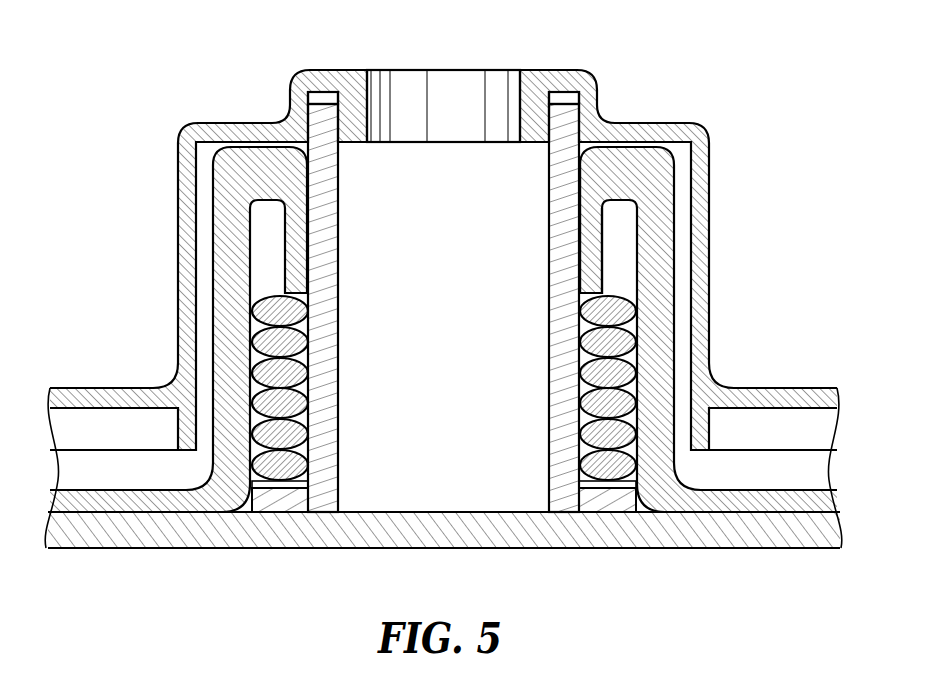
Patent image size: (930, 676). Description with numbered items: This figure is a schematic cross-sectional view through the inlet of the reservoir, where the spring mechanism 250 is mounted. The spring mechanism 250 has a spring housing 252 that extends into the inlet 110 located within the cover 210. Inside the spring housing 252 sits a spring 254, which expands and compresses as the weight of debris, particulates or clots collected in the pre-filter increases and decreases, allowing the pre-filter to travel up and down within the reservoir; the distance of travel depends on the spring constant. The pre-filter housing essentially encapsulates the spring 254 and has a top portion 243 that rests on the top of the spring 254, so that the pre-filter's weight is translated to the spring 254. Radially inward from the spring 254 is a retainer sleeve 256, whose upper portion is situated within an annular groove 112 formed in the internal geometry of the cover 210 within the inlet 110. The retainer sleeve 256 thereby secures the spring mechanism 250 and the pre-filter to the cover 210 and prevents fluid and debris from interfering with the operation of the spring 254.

The inlet 110 is at (453, 107).
The annular groove 112 is at (323, 98).
The cover 210 is at (98, 398).
The top portion 243 is at (587, 217).
The spring mechanism 250 is at (230, 217).
The spring housing 252 is at (660, 252).
The spring 254 is at (287, 342).
The retainer sleeve 256 is at (338, 408).